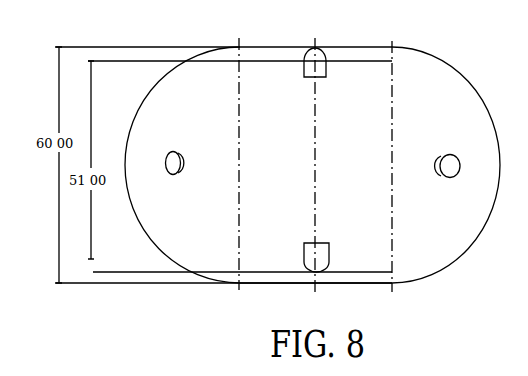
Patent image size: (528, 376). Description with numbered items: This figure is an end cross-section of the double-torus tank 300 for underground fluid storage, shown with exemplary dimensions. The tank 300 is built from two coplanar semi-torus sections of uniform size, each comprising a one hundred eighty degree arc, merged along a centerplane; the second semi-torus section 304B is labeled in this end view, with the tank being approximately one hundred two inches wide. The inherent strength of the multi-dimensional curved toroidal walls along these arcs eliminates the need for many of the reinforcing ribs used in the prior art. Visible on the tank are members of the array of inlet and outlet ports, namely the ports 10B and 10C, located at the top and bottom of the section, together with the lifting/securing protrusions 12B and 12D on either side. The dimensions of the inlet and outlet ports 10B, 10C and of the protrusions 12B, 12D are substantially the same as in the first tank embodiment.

The double-torus tank 300 is at (484, 65).
The second semi-torus section 304B is at (468, 227).
The inlet and outlet port 10B is at (307, 77).
The inlet and outlet port 10C is at (347, 223).
The lifting/securing protrusion 12B is at (170, 175).
The lifting/securing protrusion 12D is at (450, 155).